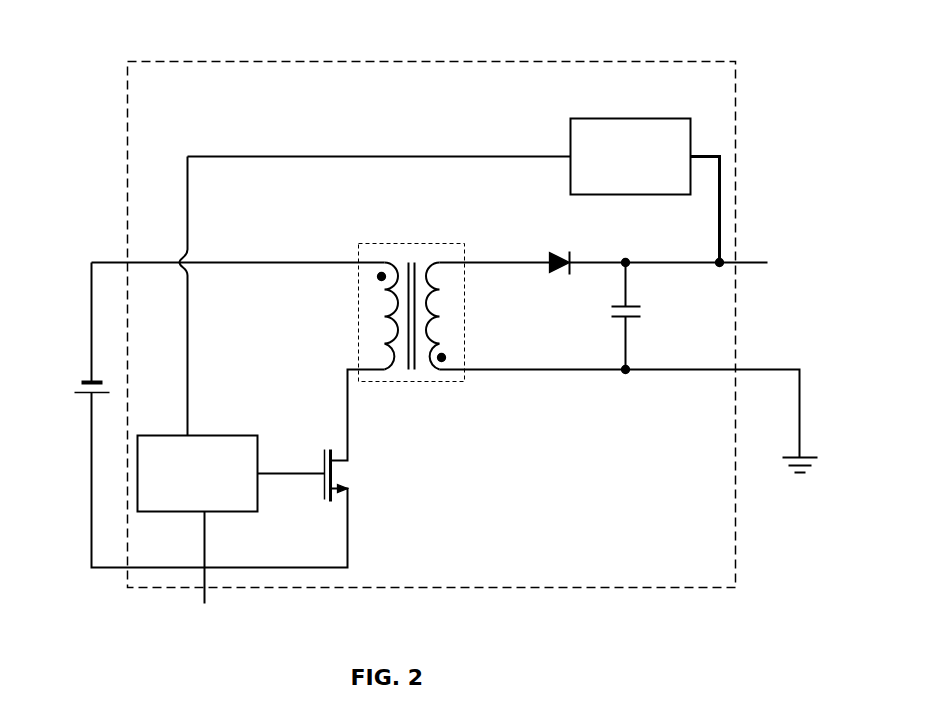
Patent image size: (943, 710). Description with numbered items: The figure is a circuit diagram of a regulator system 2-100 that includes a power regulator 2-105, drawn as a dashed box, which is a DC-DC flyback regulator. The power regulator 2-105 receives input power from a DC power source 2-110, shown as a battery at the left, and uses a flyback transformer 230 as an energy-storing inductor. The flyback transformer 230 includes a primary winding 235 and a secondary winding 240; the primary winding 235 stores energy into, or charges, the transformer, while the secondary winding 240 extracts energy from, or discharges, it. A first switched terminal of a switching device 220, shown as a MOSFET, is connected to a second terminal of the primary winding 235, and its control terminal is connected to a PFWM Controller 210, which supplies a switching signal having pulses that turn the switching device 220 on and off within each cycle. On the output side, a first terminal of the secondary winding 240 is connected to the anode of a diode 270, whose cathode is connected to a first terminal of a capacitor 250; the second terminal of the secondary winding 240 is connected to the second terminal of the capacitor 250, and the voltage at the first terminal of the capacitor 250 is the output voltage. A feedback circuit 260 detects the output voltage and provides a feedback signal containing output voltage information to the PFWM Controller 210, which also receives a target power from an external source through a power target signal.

The regulator system 2-100 is at (128, 27).
The power regulator 2-105 is at (635, 588).
The DC power source 2-110 is at (80, 393).
The PFWM Controller 210 is at (205, 436).
The switching device 220 is at (320, 495).
The flyback transformer 230 is at (413, 244).
The primary winding 235 is at (388, 318).
The secondary winding 240 is at (438, 320).
The capacitor 250 is at (618, 312).
The feedback circuit 260 is at (630, 119).
The diode 270 is at (565, 250).